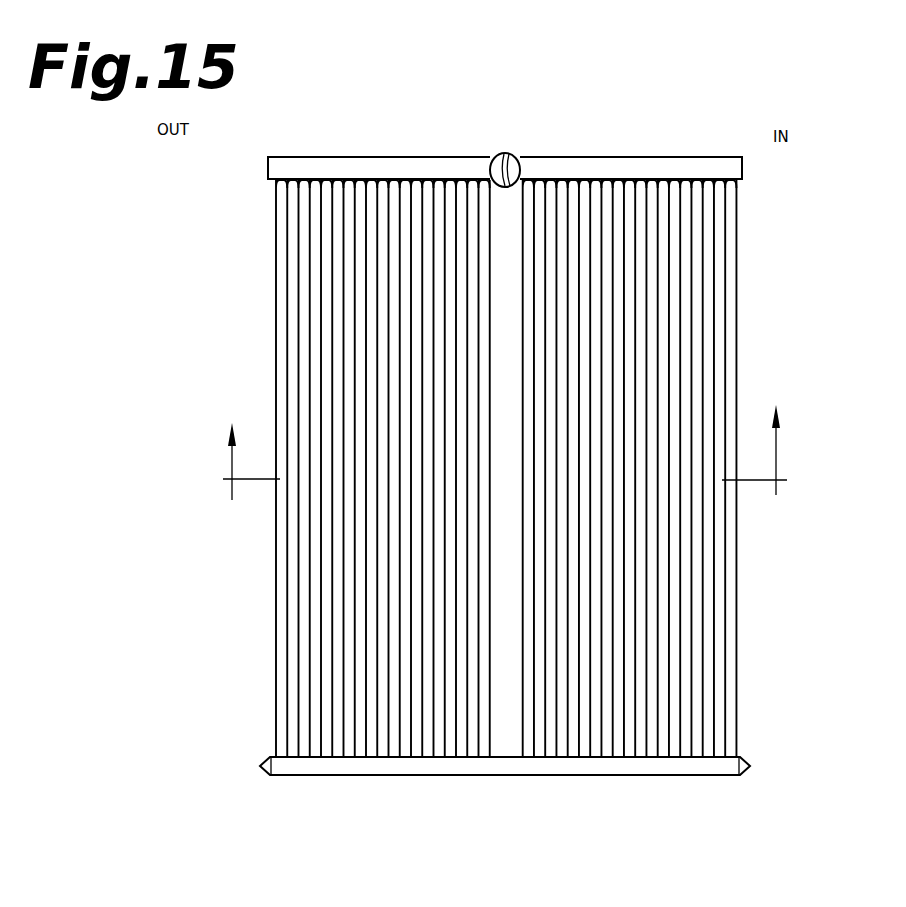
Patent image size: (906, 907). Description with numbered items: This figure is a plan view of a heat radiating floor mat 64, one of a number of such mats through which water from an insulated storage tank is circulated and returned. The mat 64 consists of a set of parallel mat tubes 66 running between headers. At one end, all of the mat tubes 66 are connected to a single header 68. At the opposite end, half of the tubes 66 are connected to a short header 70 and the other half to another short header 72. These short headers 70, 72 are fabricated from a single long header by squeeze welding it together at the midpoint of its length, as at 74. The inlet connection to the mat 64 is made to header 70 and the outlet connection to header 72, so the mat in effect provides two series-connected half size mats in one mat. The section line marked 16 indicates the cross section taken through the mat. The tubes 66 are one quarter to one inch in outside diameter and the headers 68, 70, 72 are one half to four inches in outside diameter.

The floor mat 64 is at (212, 329).
The mat tubes 66 is at (300, 619).
The single header 68 is at (460, 775).
The short header 70 is at (617, 157).
The short header 72 is at (371, 157).
The squeeze weld 74 is at (504, 153).
The section line 16 is at (502, 443).